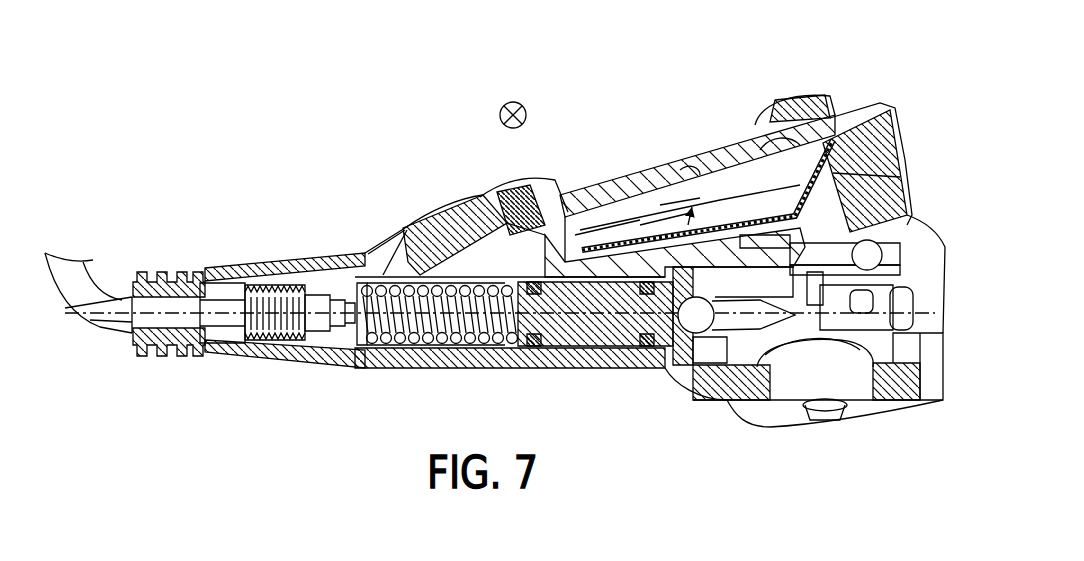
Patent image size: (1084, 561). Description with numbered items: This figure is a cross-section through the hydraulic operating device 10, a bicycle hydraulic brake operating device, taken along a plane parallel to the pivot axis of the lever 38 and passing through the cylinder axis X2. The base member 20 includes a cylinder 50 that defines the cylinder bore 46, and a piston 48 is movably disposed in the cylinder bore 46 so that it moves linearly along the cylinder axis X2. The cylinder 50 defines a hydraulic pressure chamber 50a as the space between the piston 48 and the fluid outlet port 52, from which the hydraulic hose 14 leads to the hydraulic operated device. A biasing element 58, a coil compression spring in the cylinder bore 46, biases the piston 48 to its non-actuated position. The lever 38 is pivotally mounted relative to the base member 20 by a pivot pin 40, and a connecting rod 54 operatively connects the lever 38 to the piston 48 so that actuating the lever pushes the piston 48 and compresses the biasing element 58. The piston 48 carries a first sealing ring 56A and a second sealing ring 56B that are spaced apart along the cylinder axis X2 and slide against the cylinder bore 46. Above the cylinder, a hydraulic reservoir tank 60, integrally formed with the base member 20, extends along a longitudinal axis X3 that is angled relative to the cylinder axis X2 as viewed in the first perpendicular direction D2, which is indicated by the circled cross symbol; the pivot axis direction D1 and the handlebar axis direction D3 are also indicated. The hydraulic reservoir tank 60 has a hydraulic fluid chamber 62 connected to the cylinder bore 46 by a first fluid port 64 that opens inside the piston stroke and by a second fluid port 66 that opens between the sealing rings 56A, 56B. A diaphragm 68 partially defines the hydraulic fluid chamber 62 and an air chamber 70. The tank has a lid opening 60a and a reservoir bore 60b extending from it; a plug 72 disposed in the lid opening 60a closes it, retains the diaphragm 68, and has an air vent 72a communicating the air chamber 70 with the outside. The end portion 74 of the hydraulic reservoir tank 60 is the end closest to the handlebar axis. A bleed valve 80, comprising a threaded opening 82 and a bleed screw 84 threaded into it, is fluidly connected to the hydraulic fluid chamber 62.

The hydraulic operating device 10 is at (173, 160).
The hydraulic hose 14 is at (103, 292).
The cylinder axis X2 is at (214, 348).
The fluid outlet port 52 is at (350, 350).
The biasing element 58 is at (400, 290).
The cylinder 50 is at (390, 368).
The cylinder bore 46 is at (438, 347).
The hydraulic pressure chamber 50a is at (477, 347).
The second sealing ring 56B is at (540, 346).
The piston 48 is at (598, 350).
The first sealing ring 56A is at (648, 346).
The connecting rod 54 is at (735, 320).
The pivot pin 40 is at (826, 413).
The lever 38 is at (930, 400).
The base member 20 is at (936, 248).
The air chamber 70 is at (810, 205).
The air vent 72a is at (900, 177).
The lid opening 60a is at (900, 137).
The end portion 74 is at (883, 112).
The plug 72 is at (858, 143).
The bleed valve 80 is at (813, 85).
The bleed screw 84 is at (783, 107).
The reservoir bore 60b is at (680, 167).
The hydraulic fluid chamber 62 is at (737, 178).
The threaded opening 82 is at (788, 138).
The hydraulic reservoir tank 60 is at (635, 163).
The diaphragm 68 is at (663, 220).
The longitudinal axis X3 is at (605, 217).
The second fluid port 66 is at (568, 225).
The first fluid port 64 is at (505, 250).
The pivot axis direction D1 is at (453, 158).
The first perpendicular direction D2 is at (526, 112).
The handlebar axis direction D3 is at (765, 492).